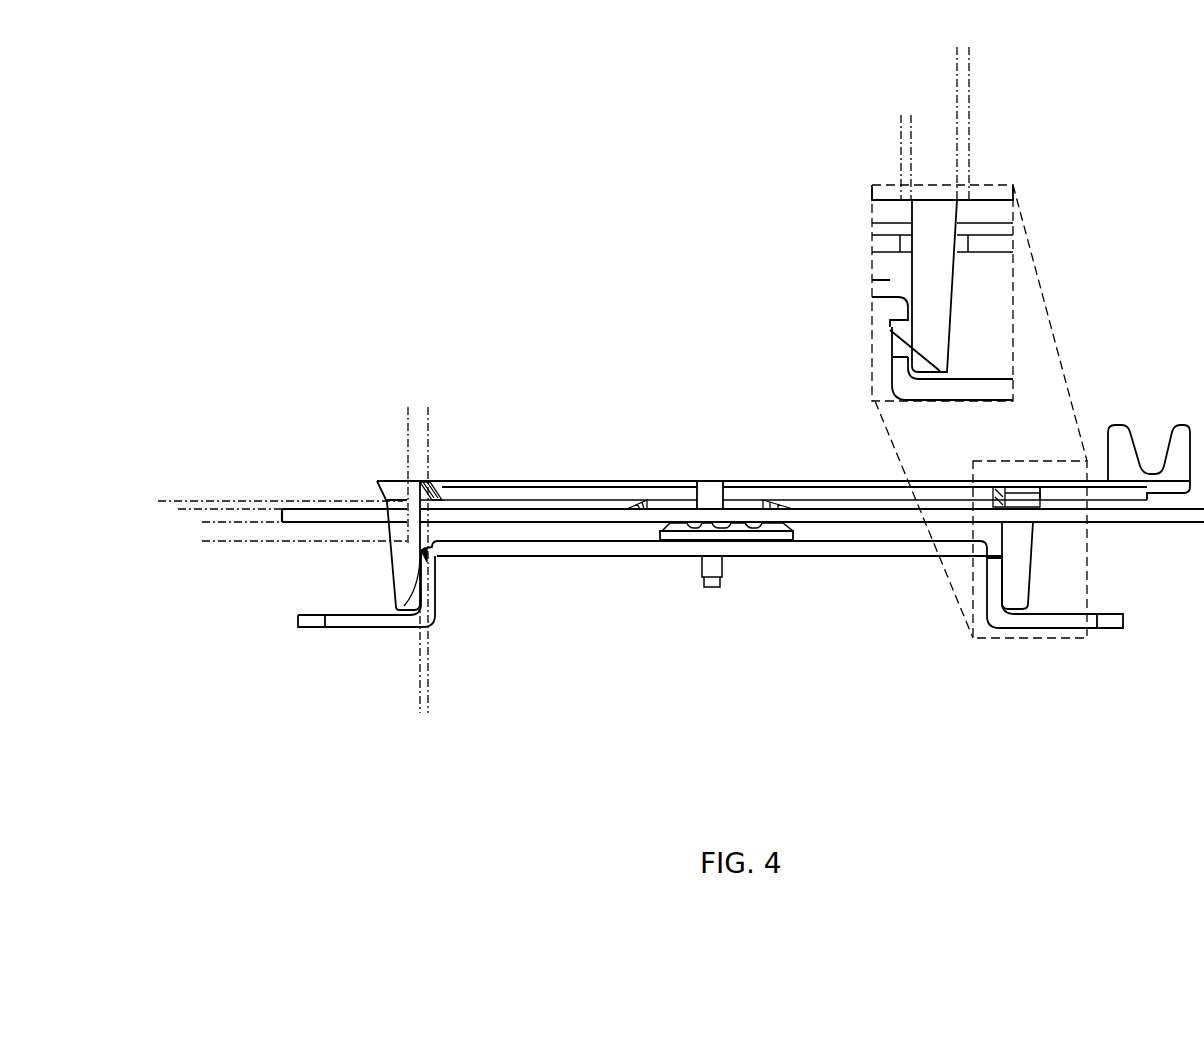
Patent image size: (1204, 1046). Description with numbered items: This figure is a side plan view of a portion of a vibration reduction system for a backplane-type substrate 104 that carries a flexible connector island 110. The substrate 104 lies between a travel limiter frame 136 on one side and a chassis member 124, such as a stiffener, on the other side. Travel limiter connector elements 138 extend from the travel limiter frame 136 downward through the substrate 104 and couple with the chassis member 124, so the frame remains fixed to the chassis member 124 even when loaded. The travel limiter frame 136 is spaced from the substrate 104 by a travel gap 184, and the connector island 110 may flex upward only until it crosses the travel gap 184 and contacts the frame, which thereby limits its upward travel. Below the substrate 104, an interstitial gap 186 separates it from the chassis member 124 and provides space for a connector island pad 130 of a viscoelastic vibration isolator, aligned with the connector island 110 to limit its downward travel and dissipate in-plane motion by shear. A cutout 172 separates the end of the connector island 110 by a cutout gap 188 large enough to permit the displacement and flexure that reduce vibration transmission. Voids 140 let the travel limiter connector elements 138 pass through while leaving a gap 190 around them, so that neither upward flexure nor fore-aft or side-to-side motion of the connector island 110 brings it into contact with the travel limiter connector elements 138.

The substrate 104 is at (330, 509).
The connector island 110 is at (573, 505).
The chassis member 124 is at (337, 616).
The connector island pad 130 is at (703, 533).
The travel limiter frame 136 is at (790, 480).
The travel limiter connector element 138 is at (393, 582).
The void 140 is at (412, 529).
The cutout 172 is at (418, 468).
The travel gap 184 is at (150, 480).
The interstitial gap 186 is at (208, 500).
The cutout gap 188 is at (428, 397).
The gap 190 is at (428, 715).